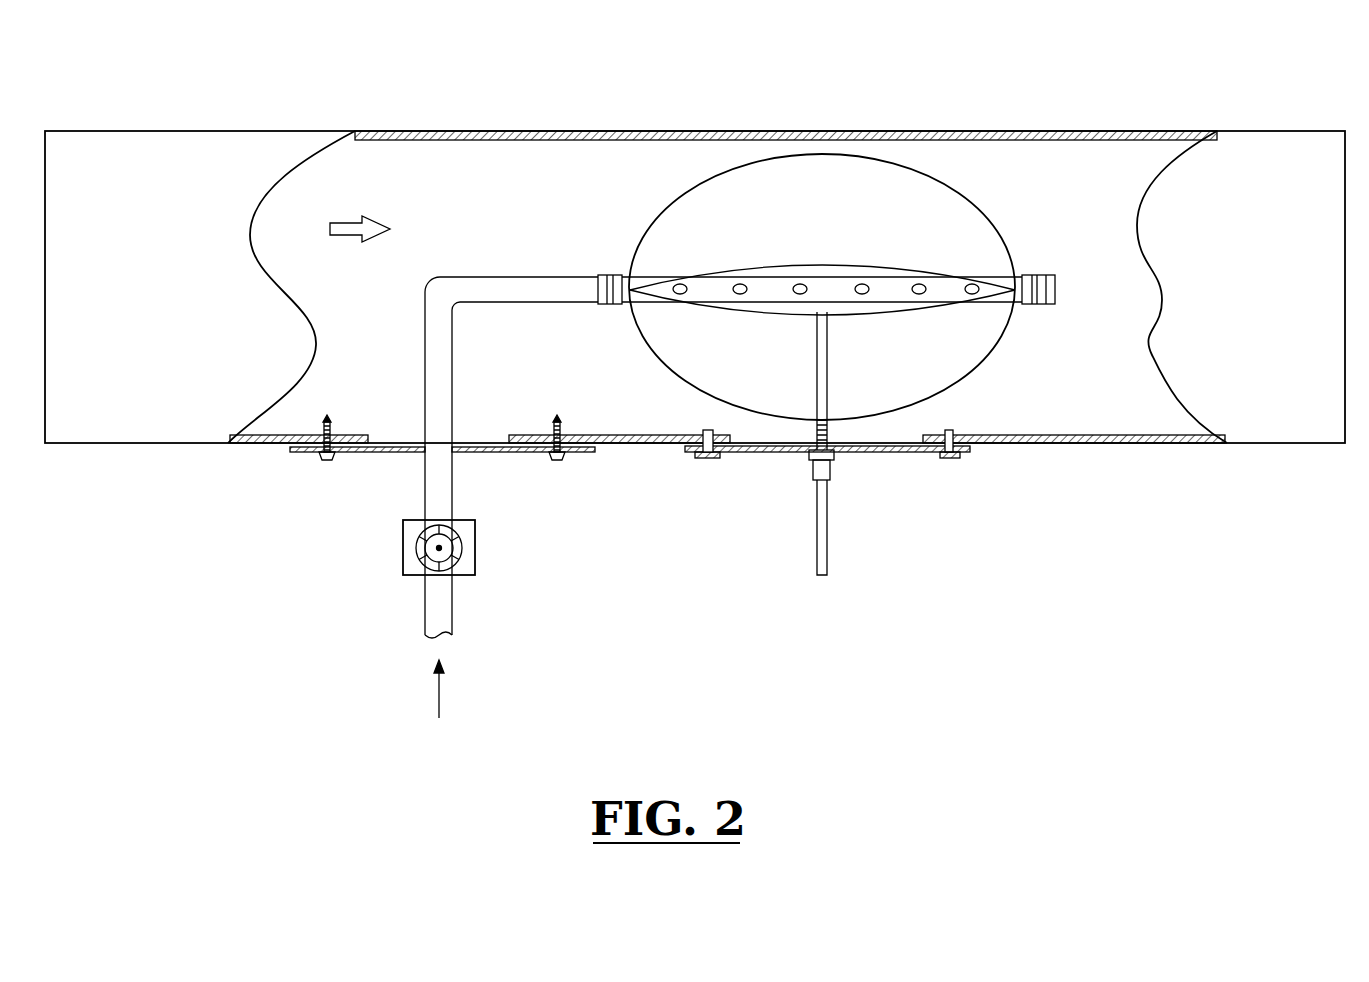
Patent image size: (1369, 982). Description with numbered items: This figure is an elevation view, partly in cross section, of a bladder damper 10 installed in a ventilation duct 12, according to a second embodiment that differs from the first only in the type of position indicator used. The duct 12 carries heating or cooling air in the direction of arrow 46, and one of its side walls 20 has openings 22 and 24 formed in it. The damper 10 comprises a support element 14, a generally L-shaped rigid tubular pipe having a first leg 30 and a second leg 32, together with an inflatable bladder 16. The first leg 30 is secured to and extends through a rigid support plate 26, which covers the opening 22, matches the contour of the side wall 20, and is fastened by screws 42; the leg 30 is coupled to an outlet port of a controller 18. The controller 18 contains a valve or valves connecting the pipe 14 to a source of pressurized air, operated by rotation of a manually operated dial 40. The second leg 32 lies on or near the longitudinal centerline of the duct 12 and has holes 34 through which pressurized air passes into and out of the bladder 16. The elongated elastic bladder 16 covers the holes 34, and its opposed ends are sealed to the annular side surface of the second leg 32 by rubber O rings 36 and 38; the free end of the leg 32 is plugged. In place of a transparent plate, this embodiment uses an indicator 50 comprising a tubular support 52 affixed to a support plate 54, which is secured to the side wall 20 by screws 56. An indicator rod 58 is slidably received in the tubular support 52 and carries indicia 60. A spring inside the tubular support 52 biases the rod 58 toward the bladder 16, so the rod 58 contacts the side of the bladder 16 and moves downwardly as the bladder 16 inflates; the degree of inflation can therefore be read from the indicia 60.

The damper 10 is at (572, 188).
The ventilation duct 12 is at (922, 127).
The support element 14 is at (436, 292).
The inflatable bladder 16 is at (725, 265).
The controller 18 is at (403, 533).
The side wall 20 is at (240, 447).
The opening 22 is at (365, 435).
The opening 24 is at (710, 432).
The support plate 26 is at (495, 455).
The first leg 30 is at (425, 352).
The second leg 32 is at (512, 275).
The holes 34 is at (985, 305).
The O ring 36 is at (607, 305).
The O ring 38 is at (1040, 275).
The dial 40 is at (462, 558).
The screws 42 is at (325, 460).
The arrow 46 is at (352, 218).
The indicator 50 is at (808, 500).
The tubular support 52 is at (832, 470).
The support plate 54 is at (770, 455).
The screws 56 is at (704, 458).
The indicator rod 58 is at (828, 367).
The indicia 60 is at (818, 412).